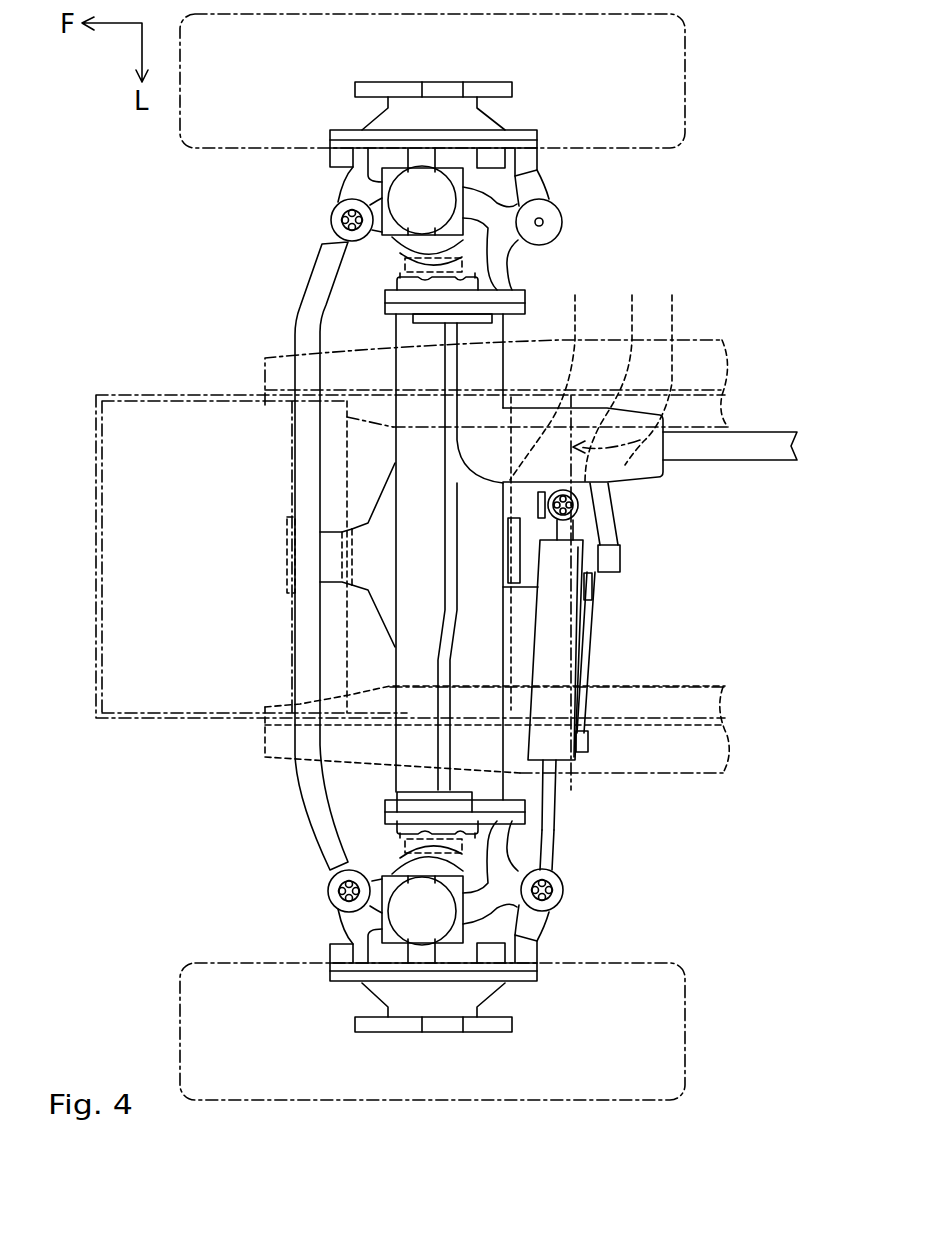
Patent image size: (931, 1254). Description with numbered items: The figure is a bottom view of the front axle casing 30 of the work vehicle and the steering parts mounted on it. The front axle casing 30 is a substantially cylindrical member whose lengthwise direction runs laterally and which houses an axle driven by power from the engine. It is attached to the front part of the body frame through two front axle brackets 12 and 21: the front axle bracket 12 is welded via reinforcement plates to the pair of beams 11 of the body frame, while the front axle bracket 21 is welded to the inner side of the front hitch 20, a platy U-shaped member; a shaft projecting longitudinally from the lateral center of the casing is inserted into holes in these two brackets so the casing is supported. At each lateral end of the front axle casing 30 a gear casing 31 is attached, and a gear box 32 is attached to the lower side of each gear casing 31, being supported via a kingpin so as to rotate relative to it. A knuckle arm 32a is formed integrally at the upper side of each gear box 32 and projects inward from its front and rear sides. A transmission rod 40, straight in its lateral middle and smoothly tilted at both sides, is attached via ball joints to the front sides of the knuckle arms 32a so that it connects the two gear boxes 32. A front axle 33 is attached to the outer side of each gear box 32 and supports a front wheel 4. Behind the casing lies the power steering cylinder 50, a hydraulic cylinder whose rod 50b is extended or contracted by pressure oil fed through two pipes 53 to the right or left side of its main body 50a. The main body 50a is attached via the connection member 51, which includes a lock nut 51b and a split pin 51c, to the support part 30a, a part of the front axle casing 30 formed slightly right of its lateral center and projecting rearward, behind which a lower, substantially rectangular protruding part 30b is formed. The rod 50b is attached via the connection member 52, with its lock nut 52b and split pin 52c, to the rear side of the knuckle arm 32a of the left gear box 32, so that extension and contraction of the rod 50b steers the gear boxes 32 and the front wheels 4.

The front wheel 4 is at (686, 72).
The beam 11 is at (706, 340).
The front axle bracket 12 is at (595, 488).
The front hitch 20 is at (135, 395).
The front axle bracket 21 is at (292, 556).
The front axle casing 30 is at (501, 545).
The support part 30a is at (550, 373).
The protruding part 30b is at (616, 374).
The gear casing 31 is at (487, 263).
The gear box 32 is at (530, 155).
The knuckle arm 32a is at (333, 213).
The front axle 33 is at (500, 90).
The transmission rod 40 is at (316, 287).
The power steering cylinder 50 is at (630, 620).
The main body 50a is at (562, 752).
The rod 50b is at (553, 832).
The connection member 51 is at (580, 509).
The lock nut 51b is at (592, 583).
The split pin 51c is at (622, 548).
The connection member 52 is at (590, 885).
The lock nut 52b is at (552, 905).
The split pin 52c is at (590, 905).
The pipe 53 is at (603, 490).